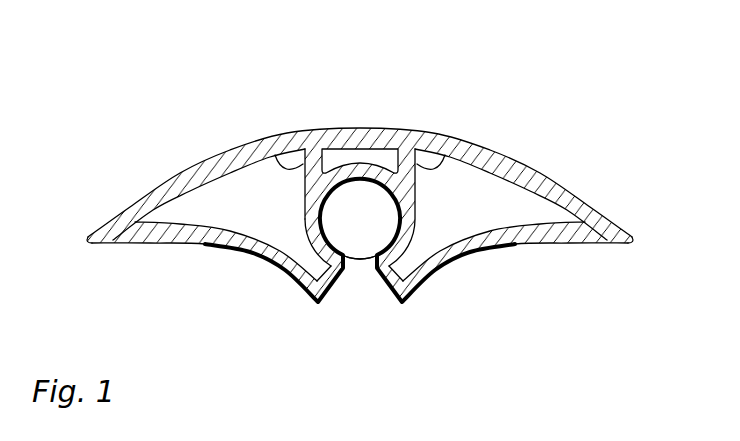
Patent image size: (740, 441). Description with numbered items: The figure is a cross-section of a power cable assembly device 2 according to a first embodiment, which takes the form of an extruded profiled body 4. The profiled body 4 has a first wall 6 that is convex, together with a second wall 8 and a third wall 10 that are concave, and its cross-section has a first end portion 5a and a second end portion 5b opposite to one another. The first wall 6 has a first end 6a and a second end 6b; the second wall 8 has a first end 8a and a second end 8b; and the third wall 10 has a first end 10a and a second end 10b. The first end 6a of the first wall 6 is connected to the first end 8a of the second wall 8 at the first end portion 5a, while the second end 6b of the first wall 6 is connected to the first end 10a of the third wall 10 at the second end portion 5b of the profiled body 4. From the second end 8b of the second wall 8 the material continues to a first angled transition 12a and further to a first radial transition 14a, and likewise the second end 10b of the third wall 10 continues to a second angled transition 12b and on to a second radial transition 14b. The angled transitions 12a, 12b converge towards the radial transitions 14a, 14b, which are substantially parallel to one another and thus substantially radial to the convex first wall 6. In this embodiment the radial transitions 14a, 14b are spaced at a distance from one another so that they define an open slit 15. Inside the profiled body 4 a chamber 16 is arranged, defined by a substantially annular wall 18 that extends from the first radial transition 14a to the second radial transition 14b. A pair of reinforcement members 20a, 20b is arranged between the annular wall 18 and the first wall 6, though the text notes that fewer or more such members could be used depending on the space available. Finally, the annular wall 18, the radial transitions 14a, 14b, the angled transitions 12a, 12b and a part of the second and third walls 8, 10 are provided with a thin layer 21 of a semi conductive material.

The power cable assembly device 2 is at (252, 88).
The extruded profiled body 4 is at (457, 88).
The first end portion 5a is at (86, 240).
The second end portion 5b is at (634, 240).
The first wall 6 is at (540, 172).
The first end of the first wall 6a is at (118, 215).
The second end of the first wall 6b is at (614, 223).
The second wall 8 is at (192, 244).
The first end of the second wall 8a is at (123, 244).
The second end of the second wall 8b is at (312, 304).
The third wall 10 is at (512, 244).
The first end of the third wall 10a is at (606, 244).
The second end of the third wall 10b is at (399, 304).
The first angled transition 12a is at (338, 295).
The second angled transition 12b is at (386, 296).
The first radial transition 14a is at (354, 261).
The second radial transition 14b is at (362, 258).
The open slit 15 is at (390, 245).
The chamber 16 is at (371, 227).
The annular wall 18 is at (324, 215).
The reinforcement member 20a is at (292, 164).
The reinforcement member 20b is at (428, 164).
The thin layer of semi conductive material 21 is at (364, 180).